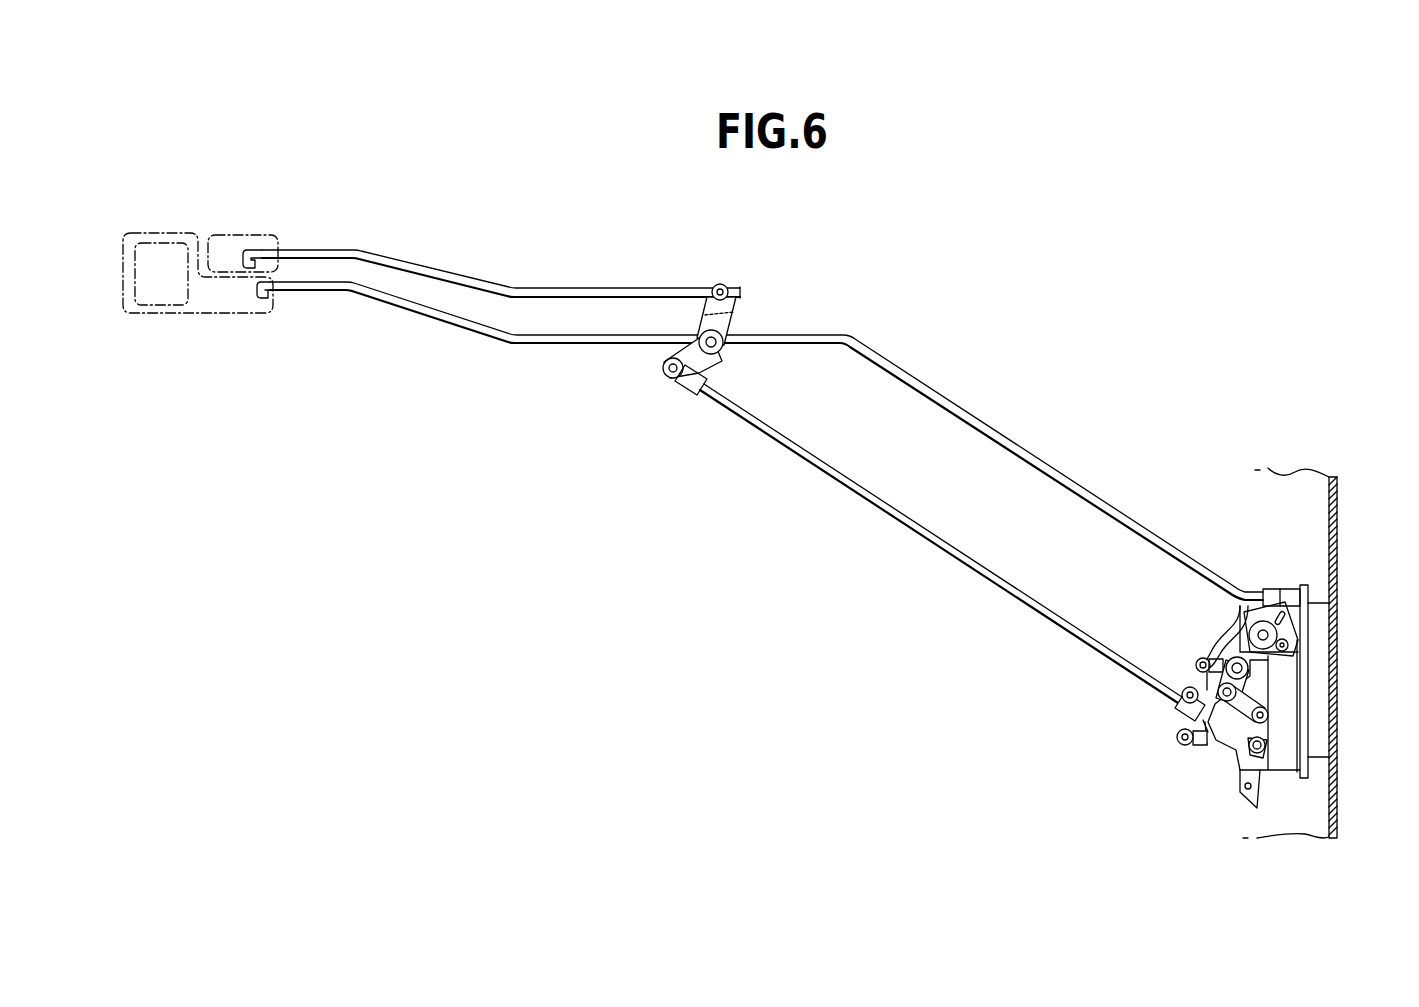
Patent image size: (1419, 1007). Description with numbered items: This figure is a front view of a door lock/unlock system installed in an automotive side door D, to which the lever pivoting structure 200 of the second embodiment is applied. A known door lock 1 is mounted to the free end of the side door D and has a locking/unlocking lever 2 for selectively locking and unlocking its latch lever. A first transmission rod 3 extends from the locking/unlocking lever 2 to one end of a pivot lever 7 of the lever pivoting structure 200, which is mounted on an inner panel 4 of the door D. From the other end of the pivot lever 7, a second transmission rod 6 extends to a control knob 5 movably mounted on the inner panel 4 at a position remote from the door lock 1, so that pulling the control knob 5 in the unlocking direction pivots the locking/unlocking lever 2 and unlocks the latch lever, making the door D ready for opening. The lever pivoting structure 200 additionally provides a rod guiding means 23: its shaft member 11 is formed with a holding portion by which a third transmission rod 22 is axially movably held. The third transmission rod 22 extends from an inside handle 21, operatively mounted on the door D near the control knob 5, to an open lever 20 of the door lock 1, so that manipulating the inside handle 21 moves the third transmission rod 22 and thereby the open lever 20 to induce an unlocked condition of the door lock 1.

The door lock 1 is at (1233, 752).
The locking/unlocking lever 2 is at (1208, 742).
The first transmission rod 3 is at (1013, 598).
The inner panel 4 is at (1275, 468).
The control knob 5 is at (257, 235).
The second transmission rod 6 is at (522, 287).
The pivot lever 7 is at (737, 320).
The shaft member 11 is at (703, 323).
The open lever 20 is at (1290, 592).
The inside handle 21 is at (210, 317).
The third transmission rod 22 is at (902, 372).
The rod guiding means 23 is at (722, 362).
The lever pivoting structure 200 is at (755, 350).
The side door D is at (1342, 537).